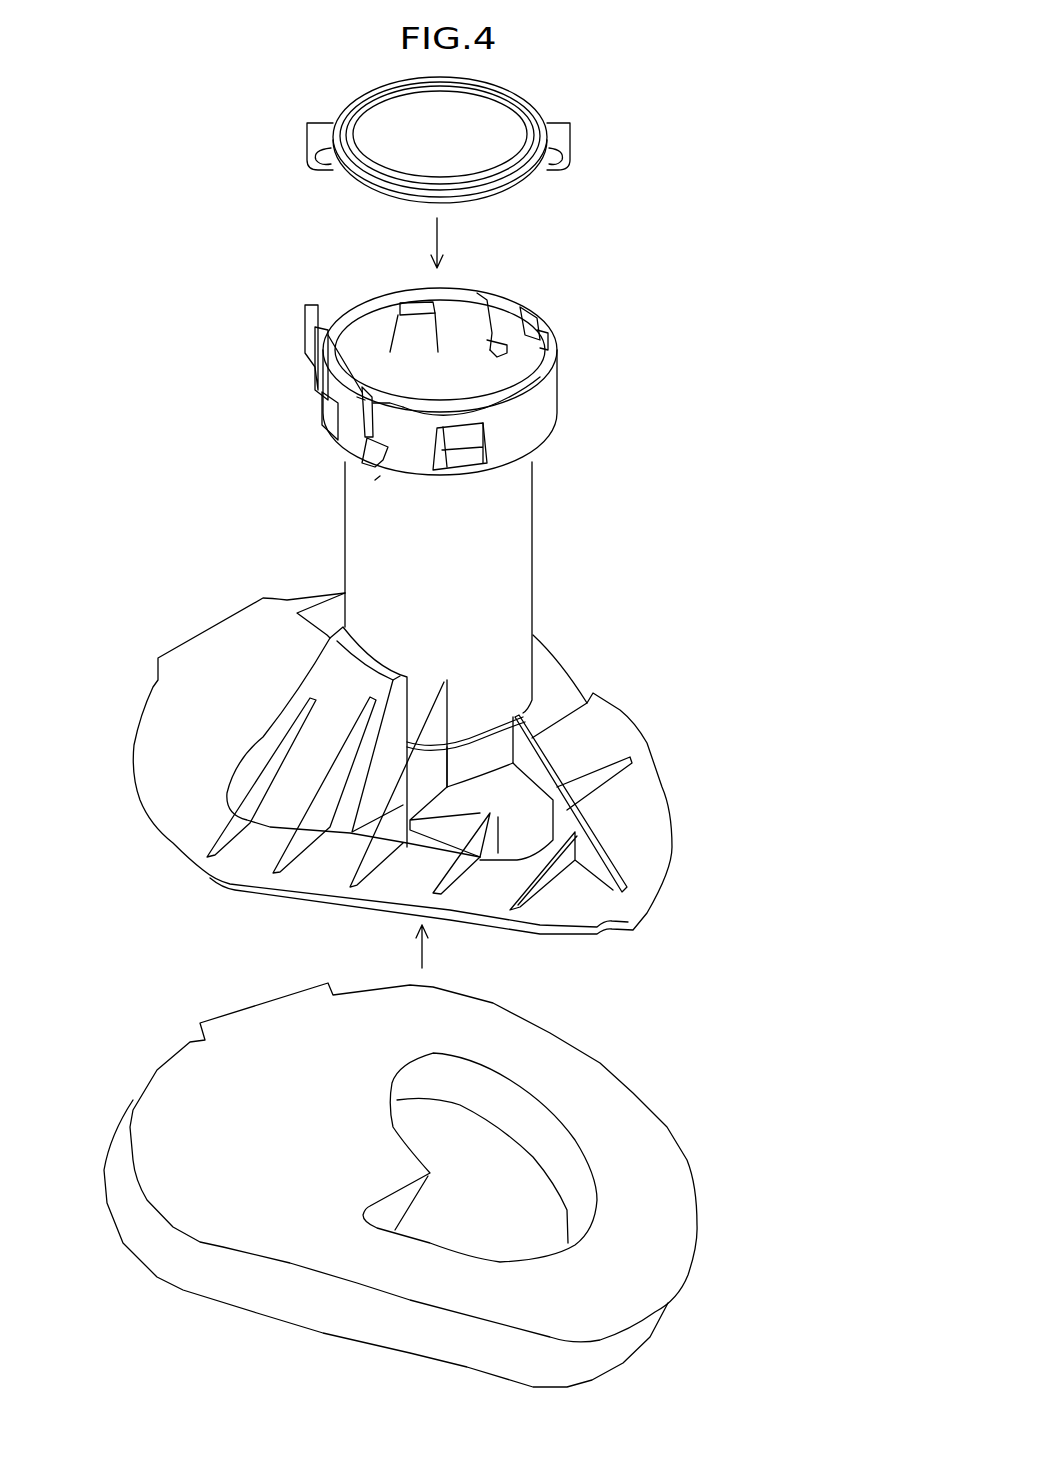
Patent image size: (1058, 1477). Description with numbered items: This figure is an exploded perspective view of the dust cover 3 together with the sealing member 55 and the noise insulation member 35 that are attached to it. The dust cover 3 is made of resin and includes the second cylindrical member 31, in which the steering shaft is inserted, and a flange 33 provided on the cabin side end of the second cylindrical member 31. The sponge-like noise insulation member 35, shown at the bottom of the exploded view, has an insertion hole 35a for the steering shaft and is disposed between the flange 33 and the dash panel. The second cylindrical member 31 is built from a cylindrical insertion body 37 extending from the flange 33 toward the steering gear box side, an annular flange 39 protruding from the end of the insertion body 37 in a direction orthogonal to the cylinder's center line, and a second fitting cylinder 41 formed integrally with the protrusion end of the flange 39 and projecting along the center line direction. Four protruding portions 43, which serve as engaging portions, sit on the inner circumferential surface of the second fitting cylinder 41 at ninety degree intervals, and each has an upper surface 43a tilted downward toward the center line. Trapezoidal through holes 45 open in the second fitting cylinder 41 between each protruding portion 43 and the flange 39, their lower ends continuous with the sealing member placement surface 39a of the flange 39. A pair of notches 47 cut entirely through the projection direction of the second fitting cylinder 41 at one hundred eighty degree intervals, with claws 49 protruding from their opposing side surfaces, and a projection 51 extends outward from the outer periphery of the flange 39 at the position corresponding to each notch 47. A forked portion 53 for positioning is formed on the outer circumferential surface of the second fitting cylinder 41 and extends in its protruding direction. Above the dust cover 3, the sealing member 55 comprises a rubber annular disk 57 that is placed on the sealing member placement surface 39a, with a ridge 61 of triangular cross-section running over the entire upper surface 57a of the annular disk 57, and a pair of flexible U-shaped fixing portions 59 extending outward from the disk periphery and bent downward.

The dust cover 3 is at (443, 567).
The second cylindrical member 31 is at (450, 457).
The flange 33 is at (640, 828).
The noise insulation member 35 is at (446, 1185).
The insertion hole 35a is at (577, 1188).
The insertion body 37 is at (532, 465).
The annular flange 39 is at (547, 440).
The sealing member placement surface 39a is at (436, 357).
The second fitting cylinder 41 is at (557, 380).
The protruding portion 43 is at (415, 308).
The upper surface 43a is at (422, 305).
The through hole 45 is at (400, 328).
The notch 47 is at (488, 300).
The claw 49 is at (498, 325).
The projection 51 is at (375, 480).
The forked portion 53 is at (305, 325).
The sealing member 55 is at (440, 129).
The annular disk 57 is at (380, 105).
The upper surface 57a is at (372, 98).
The fixing portion 59 is at (318, 138).
The ridge 61 is at (330, 110).